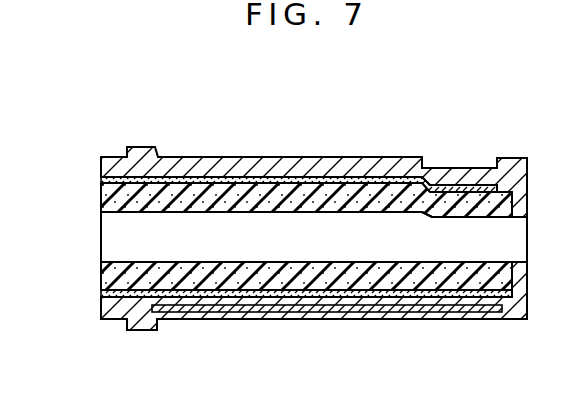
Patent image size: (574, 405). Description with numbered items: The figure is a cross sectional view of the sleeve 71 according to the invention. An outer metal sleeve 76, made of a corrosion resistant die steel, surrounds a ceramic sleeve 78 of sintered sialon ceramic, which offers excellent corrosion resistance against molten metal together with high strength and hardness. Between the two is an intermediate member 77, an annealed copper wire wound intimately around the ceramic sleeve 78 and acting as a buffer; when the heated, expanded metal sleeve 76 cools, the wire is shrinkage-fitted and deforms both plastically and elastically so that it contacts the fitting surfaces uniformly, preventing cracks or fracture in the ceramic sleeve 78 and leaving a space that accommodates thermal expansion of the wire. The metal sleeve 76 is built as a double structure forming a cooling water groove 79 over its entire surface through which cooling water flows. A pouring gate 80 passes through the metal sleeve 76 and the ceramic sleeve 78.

The sleeve 71 is at (264, 156).
The metal sleeve 76 is at (357, 157).
The intermediate member 77 is at (101, 180).
The ceramic sleeve 78 is at (101, 272).
The cooling water groove 79 is at (492, 320).
The pouring gate 80 is at (457, 168).